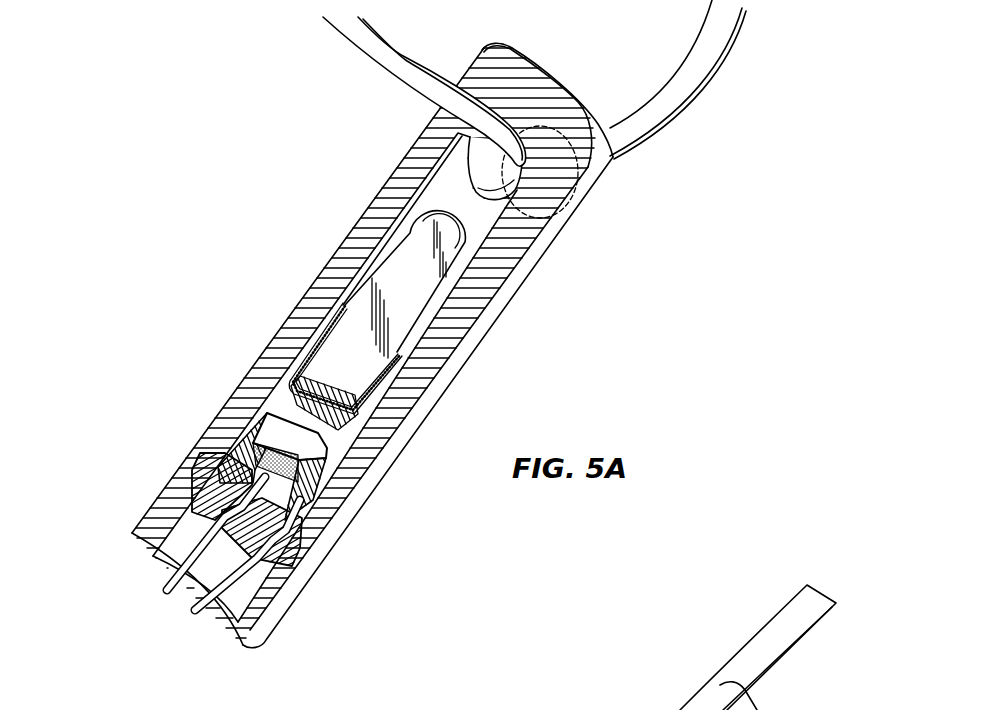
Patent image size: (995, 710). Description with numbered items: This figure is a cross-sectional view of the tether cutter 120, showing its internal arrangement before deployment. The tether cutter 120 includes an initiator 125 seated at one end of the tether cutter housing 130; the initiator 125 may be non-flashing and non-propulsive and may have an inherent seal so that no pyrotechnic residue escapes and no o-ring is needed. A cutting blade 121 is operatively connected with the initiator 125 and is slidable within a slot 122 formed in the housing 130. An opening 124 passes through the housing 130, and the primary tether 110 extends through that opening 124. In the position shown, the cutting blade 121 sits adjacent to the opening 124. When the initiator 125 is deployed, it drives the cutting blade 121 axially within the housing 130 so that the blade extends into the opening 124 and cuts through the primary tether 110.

The primary tether 110 is at (672, 100).
The tether cutter 120 is at (150, 320).
The cutting blade 121 is at (402, 288).
The slot 122 is at (472, 248).
The opening 124 is at (497, 173).
The initiator 125 is at (178, 600).
The tether cutter housing 130 is at (485, 280).